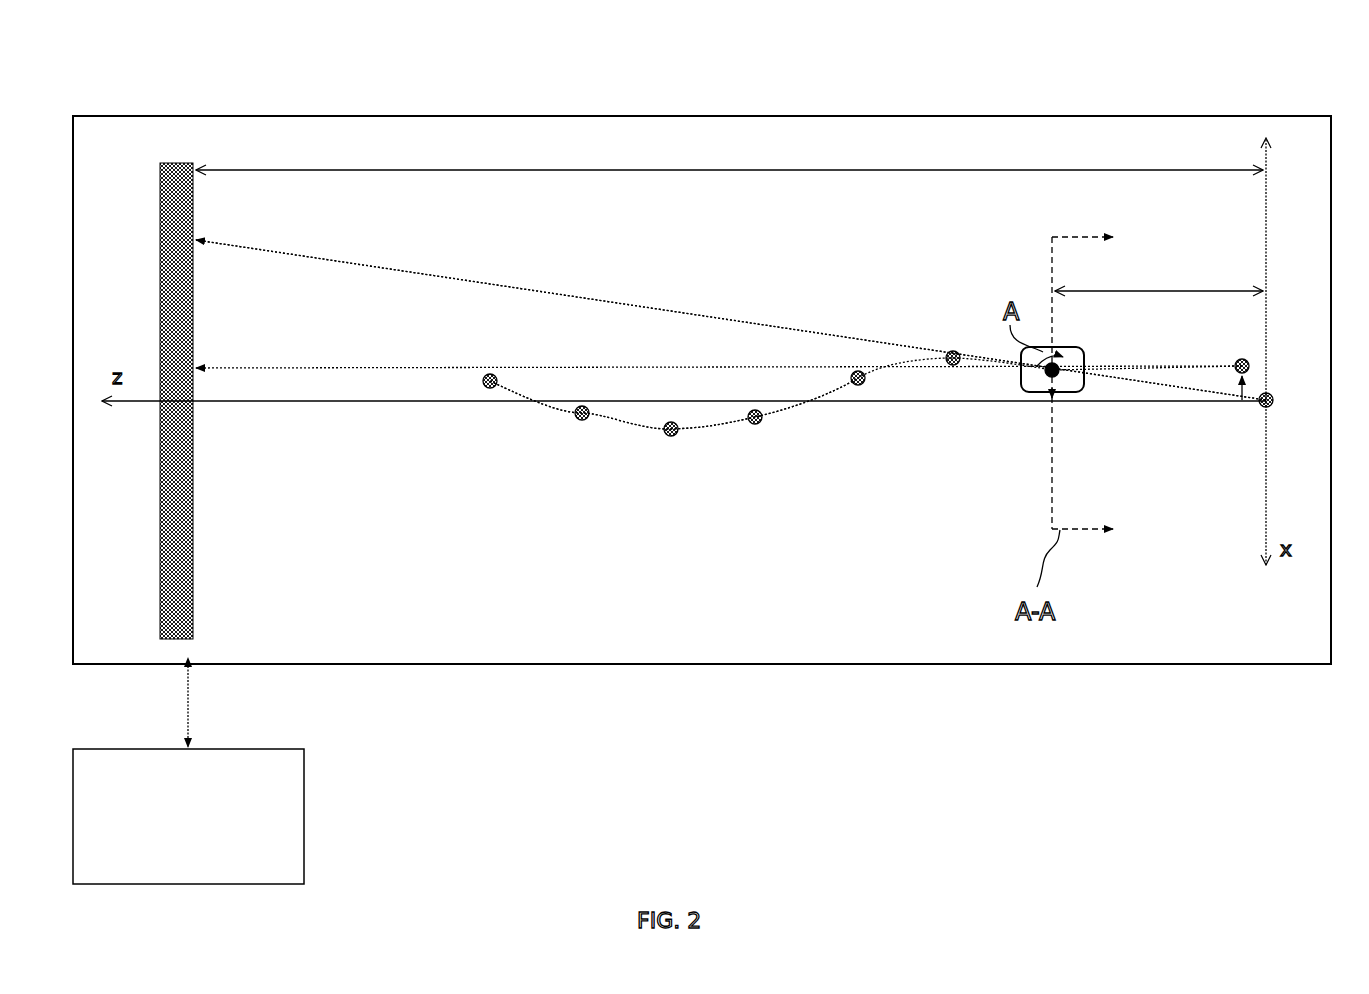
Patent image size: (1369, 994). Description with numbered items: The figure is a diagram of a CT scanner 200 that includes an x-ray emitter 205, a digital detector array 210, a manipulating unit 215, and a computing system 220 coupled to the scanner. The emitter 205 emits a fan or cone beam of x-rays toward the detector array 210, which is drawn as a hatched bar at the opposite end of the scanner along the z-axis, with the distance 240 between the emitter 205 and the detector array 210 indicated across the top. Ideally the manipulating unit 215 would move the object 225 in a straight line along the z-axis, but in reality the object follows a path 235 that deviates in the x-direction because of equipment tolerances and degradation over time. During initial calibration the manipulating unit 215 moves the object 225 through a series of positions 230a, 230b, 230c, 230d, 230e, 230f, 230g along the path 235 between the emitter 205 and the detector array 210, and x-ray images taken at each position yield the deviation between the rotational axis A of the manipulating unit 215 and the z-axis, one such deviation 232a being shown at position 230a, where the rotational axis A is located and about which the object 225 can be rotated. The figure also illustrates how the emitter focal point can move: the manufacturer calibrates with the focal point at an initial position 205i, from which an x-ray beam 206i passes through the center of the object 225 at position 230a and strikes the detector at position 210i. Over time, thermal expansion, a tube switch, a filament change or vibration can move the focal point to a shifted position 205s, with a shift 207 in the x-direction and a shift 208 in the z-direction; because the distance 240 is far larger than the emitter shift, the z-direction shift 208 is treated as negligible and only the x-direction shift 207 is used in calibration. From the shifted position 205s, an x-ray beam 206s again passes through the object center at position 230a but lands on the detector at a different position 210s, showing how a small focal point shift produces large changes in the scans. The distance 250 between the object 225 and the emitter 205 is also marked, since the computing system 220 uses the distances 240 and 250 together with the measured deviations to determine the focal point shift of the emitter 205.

The CT scanner 200 is at (236, 62).
The x-ray emitter 205 is at (1266, 392).
The shifted position of the focal point 205s is at (1236, 361).
The initial position of the focal point 205i is at (1272, 405).
The x-ray beam 206i is at (710, 305).
The x-ray beam 206s is at (425, 368).
The shift in the x-direction 207 is at (1238, 388).
The shift in the z-direction 208 is at (1252, 366).
The digital detector array 210 is at (158, 525).
The detector position 210i is at (198, 232).
The detector position 210s is at (198, 362).
The manipulating unit 215 is at (1020, 375).
The computing system 220 is at (188, 775).
The object 225 is at (1045, 375).
The position 230a is at (1075, 392).
The position 230b is at (950, 352).
The position 230c is at (857, 386).
The position 230d is at (755, 425).
The position 230e is at (670, 437).
The position 230f is at (580, 421).
The position 230g is at (490, 389).
The deviation 232a is at (1025, 390).
The path 235 is at (623, 422).
The distance 240 is at (778, 173).
The distance 250 is at (1225, 291).